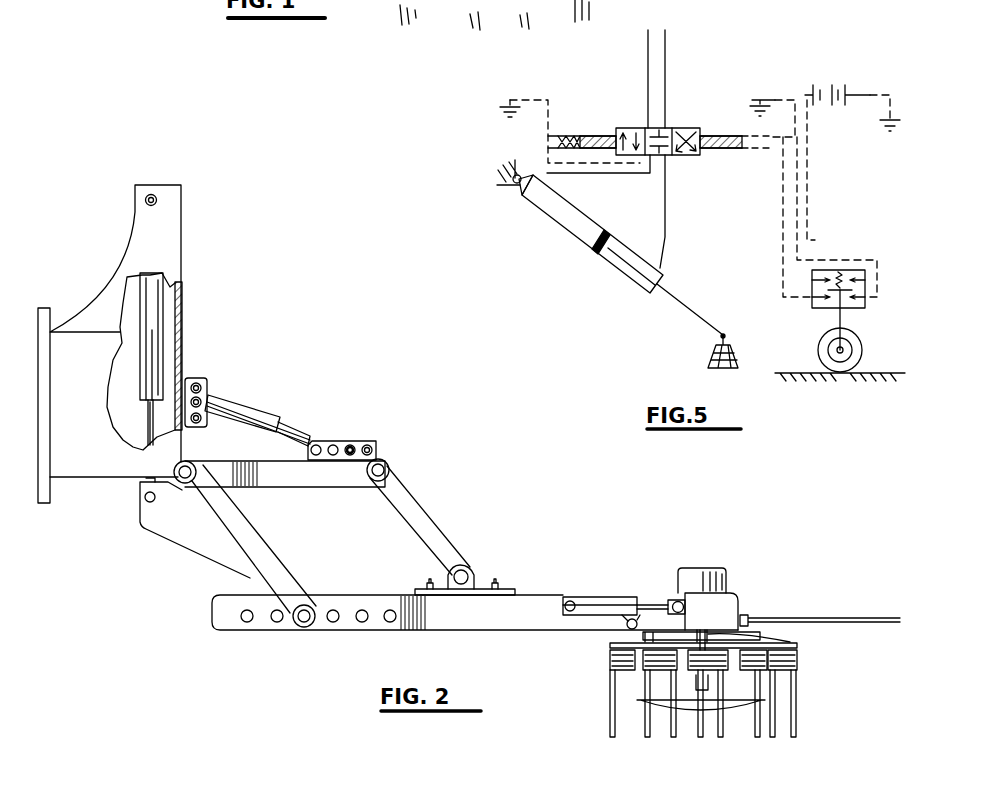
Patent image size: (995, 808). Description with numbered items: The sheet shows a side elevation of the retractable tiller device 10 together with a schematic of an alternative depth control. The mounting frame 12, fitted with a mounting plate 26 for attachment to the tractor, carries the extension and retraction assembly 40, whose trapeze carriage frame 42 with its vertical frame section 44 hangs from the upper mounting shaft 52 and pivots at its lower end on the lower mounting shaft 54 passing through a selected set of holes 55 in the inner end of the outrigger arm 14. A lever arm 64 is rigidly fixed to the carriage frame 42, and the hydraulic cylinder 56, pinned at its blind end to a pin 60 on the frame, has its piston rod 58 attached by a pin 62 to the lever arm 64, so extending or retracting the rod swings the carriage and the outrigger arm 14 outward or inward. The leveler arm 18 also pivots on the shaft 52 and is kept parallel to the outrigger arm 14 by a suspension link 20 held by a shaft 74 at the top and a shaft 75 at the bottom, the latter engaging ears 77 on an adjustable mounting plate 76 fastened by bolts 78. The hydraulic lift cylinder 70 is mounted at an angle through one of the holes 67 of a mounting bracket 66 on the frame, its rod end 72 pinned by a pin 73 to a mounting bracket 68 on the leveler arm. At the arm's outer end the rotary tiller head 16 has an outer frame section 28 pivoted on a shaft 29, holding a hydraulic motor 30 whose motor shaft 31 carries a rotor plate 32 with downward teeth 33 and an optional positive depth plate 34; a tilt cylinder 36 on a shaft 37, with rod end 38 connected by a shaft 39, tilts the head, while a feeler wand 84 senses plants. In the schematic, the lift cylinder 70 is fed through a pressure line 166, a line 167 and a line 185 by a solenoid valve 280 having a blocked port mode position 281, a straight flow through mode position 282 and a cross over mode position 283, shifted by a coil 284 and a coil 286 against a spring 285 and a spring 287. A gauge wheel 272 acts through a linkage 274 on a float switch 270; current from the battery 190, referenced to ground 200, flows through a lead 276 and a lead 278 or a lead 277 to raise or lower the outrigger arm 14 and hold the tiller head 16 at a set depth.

In FIG. 2, the retractable tiller device 10 is at (412, 445).
In FIG. 2, the mounting frame 12 is at (122, 248).
In FIG. 2, the outrigger arm 14 is at (492, 632).
In FIG. 5, the outrigger arm 14 is at (691, 354).
In FIG. 2, the rotary tiller head 16 is at (766, 606).
In FIG. 5, the rotary tiller head 16 is at (708, 358).
In FIG. 2, the leveler arm 18 is at (293, 490).
In FIG. 2, the suspension link 20 is at (428, 510).
In FIG. 2, the mounting plate 26 is at (38, 330).
In FIG. 2, the outer frame section 28 is at (742, 592).
In FIG. 2, the shaft 29 is at (626, 630).
In FIG. 2, the hydraulic motor 30 is at (708, 568).
In FIG. 2, the motor shaft 31 is at (795, 641).
In FIG. 2, the rotor plate 32 is at (797, 650).
In FIG. 2, the teeth 33 is at (797, 695).
In FIG. 2, the positive depth plate 34 is at (735, 712).
In FIG. 2, the tilt cylinder 36 is at (593, 597).
In FIG. 2, the shaft 37 is at (575, 597).
In FIG. 2, the rod end 38 is at (664, 600).
In FIG. 2, the shaft 39 is at (677, 601).
In FIG. 2, the extension and retraction assembly 40 is at (168, 567).
In FIG. 2, the trapeze carriage frame 42 is at (264, 549).
In FIG. 2, the vertical frame section 44 is at (227, 553).
In FIG. 2, the upper mounting shaft 52 is at (172, 468).
In FIG. 2, the lower mounting shaft 54 is at (303, 628).
In FIG. 2, the holes 55 is at (362, 624).
In FIG. 2, the hydraulic cylinder 56 is at (140, 393).
In FIG. 2, the piston rod 58 is at (140, 430).
In FIG. 2, the pin 60 is at (145, 200).
In FIG. 2, the pin 62 is at (144, 497).
In FIG. 2, the lever arm 64 is at (150, 542).
In FIG. 2, the mounting bracket 66 is at (196, 378).
In FIG. 2, the holes 67 is at (200, 390).
In FIG. 2, the mounting bracket 68 is at (343, 440).
In FIG. 2, the hydraulic lift cylinder 70 is at (250, 400).
In FIG. 5, the hydraulic lift cylinder 70 is at (552, 226).
In FIG. 2, the rod end 72 is at (296, 425).
In FIG. 5, the rod end 72 is at (688, 315).
In FIG. 2, the pin 73 is at (365, 443).
In FIG. 2, the shaft 74 is at (390, 466).
In FIG. 2, the shaft 75 is at (462, 570).
In FIG. 2, the adjustable mounting plate 76 is at (518, 588).
In FIG. 2, the ears 77 is at (447, 575).
In FIG. 2, the bolts 78 is at (496, 580).
In FIG. 2, the feeler wand 84 is at (810, 618).
In FIG. 5, the pressure line 166 is at (668, 68).
In FIG. 5, the hydraulic line 167 is at (645, 67).
In FIG. 5, the line 185 is at (667, 243).
In FIG. 5, the battery 190 is at (845, 55).
In FIG. 5, the ground 200 is at (506, 128).
In FIG. 5, the float switch 270 is at (826, 308).
In FIG. 5, the gauge wheel 272 is at (818, 352).
In FIG. 5, the linkage 274 is at (842, 322).
In FIG. 5, the lead 276 is at (810, 203).
In FIG. 5, the lead 277 is at (783, 268).
In FIG. 5, the lead 278 is at (800, 236).
In FIG. 5, the solenoid valve 280 is at (640, 127).
In FIG. 5, the blocked port mode position 281 is at (660, 126).
In FIG. 5, the straight flow through mode position 282 is at (628, 127).
In FIG. 5, the cross over mode position 283 is at (684, 127).
In FIG. 5, the coil 284 is at (597, 156).
In FIG. 5, the spring 285 is at (570, 132).
In FIG. 5, the coil 286 is at (728, 152).
In FIG. 5, the spring 287 is at (757, 155).